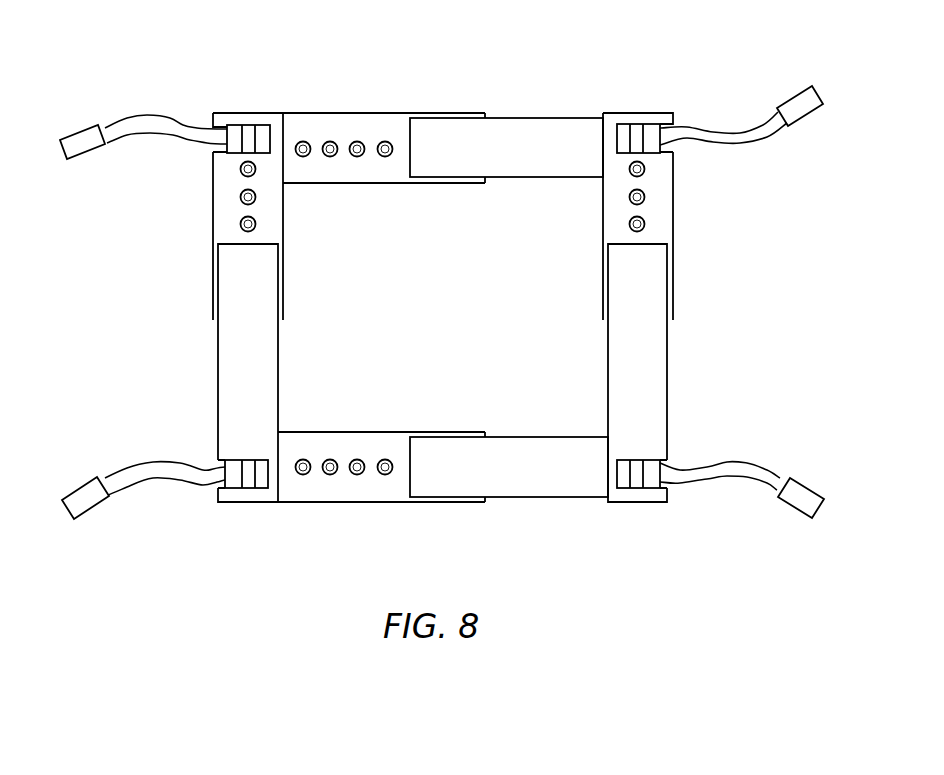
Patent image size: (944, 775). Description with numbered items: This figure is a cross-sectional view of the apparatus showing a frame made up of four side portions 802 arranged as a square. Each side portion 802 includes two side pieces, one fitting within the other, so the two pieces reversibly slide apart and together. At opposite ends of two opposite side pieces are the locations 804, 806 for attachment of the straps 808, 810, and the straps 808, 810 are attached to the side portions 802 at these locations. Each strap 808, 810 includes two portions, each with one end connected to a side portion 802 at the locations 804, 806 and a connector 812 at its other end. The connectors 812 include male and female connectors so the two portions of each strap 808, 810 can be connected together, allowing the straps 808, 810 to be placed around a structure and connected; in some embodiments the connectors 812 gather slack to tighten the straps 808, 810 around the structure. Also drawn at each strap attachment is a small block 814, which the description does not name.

The side portion 802 is at (502, 117).
The location for attachment of the strap 804 is at (215, 147).
The location for attachment of the strap 806 is at (220, 463).
The strap 808 is at (122, 117).
The strap 810 is at (112, 473).
The connector 812 is at (83, 157).
The connector block 814 is at (250, 125).